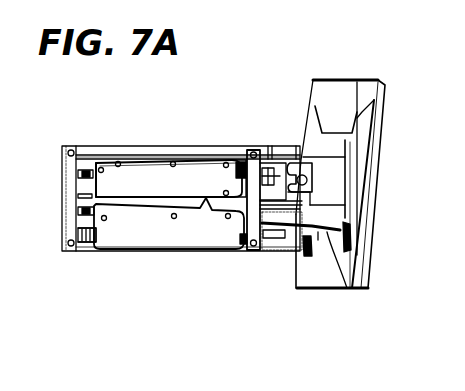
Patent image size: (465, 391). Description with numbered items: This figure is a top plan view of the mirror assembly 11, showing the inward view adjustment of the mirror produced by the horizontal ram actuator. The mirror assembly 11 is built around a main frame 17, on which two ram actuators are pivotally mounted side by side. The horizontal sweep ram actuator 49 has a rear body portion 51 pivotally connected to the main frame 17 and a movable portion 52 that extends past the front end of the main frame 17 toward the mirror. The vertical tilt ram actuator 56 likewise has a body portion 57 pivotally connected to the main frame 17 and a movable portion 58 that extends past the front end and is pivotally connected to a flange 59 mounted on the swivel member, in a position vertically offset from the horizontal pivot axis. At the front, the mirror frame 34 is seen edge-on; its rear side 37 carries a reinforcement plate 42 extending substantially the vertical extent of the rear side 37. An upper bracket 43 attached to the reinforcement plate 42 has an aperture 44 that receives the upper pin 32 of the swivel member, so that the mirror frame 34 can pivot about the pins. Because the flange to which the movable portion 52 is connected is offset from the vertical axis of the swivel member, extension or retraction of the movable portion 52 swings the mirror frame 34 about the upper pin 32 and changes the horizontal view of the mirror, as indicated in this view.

The mirror assembly 11 is at (162, 306).
The main frame 17 is at (60, 195).
The upper pin 32 is at (303, 176).
The mirror frame 34 is at (380, 255).
The rear side 37 is at (310, 278).
The reinforcement plate 42 is at (339, 127).
The upper bracket 43 is at (350, 290).
The aperture 44 is at (308, 180).
The horizontal sweep ram actuator 49 is at (142, 255).
The rear body portion 51 is at (106, 248).
The movable portion 52 is at (263, 250).
The vertical tilt ram actuator 56 is at (160, 158).
The body portion 57 is at (103, 162).
The movable portion 58 is at (238, 167).
The flange 59 is at (270, 173).